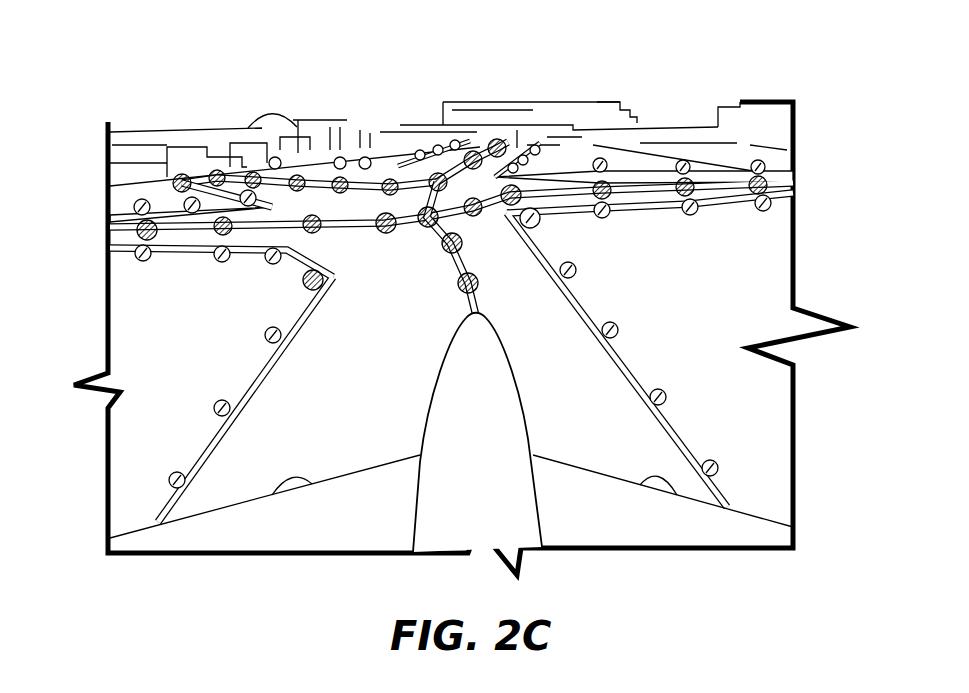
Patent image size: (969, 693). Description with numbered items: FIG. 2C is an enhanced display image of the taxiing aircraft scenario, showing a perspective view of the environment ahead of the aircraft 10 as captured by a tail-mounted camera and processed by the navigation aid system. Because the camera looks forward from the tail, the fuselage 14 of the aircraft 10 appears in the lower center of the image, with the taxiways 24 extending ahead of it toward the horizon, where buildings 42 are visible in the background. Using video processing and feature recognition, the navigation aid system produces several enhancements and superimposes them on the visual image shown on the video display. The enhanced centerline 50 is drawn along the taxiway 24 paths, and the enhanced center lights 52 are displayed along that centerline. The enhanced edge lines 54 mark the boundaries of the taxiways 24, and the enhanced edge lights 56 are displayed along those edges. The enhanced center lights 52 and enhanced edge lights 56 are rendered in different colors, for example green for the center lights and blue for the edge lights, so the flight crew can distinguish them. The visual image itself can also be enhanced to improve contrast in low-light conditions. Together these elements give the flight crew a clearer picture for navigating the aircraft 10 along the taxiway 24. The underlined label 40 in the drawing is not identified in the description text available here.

The aircraft 10 is at (510, 485).
The fuselage 14 is at (450, 382).
The taxiways 24 is at (558, 345).
The airport environment 40 is at (718, 322).
The buildings 42 is at (450, 102).
The enhanced centerline 50 is at (553, 193).
The enhanced center lights 52 is at (482, 290).
The enhanced edge lines 54 is at (651, 203).
The enhanced edge lights 56 is at (663, 410).